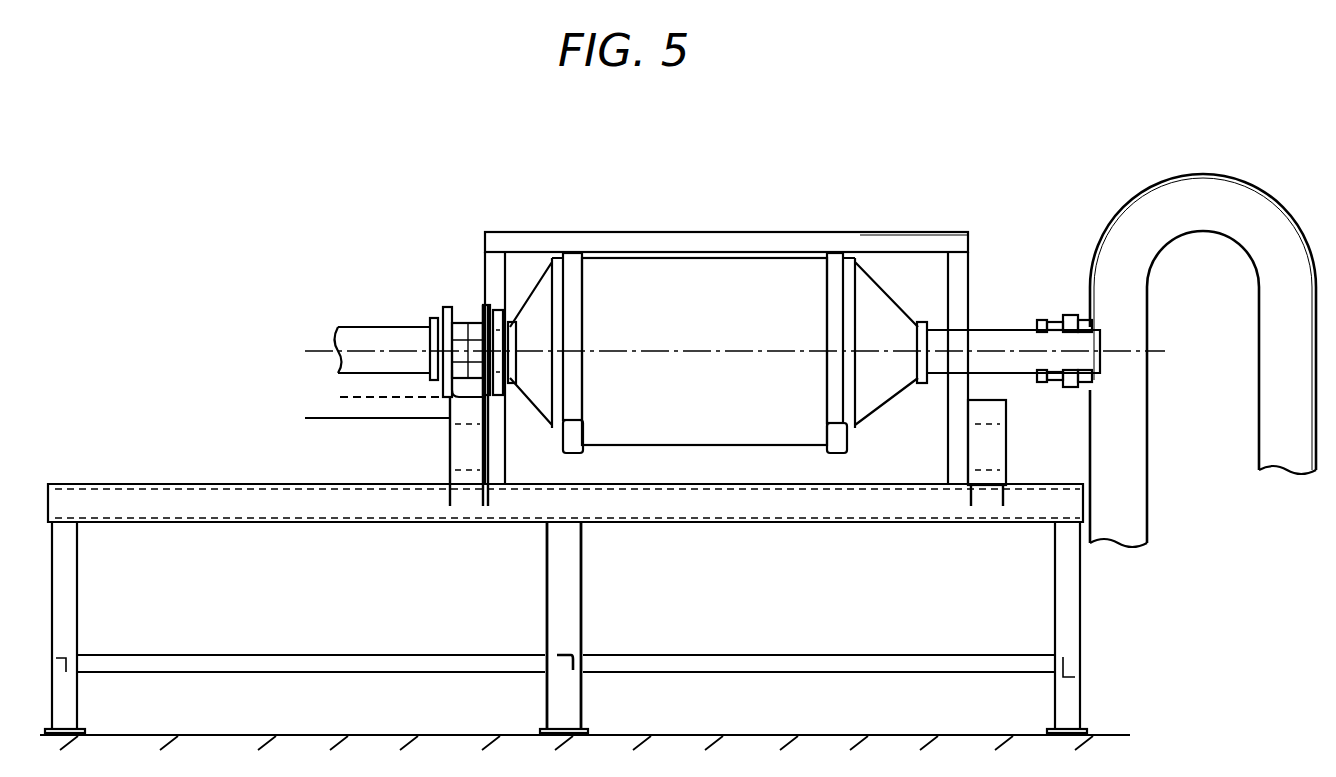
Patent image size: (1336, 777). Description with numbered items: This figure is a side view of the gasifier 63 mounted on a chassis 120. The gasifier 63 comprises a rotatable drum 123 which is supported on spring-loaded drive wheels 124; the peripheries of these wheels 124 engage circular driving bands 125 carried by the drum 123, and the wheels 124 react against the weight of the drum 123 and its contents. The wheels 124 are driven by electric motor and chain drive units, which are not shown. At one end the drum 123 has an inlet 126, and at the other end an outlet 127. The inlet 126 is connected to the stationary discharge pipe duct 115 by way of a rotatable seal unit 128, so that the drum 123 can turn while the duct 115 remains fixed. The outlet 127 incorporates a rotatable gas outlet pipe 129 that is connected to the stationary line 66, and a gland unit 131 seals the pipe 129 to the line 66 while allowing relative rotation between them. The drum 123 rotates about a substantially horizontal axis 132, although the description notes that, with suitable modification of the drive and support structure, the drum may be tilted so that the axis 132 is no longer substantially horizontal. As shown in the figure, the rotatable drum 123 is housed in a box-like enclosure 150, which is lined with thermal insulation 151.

The gasifier 63 is at (676, 226).
The stationary line 66 is at (1090, 433).
The stationary discharge pipe duct 115 is at (343, 338).
The chassis 120 is at (1085, 634).
The rotatable drum 123 is at (739, 290).
The spring-loaded drive wheels 124 is at (578, 437).
The circular driving bands 125 is at (575, 305).
The inlet 126 is at (507, 310).
The outlet 127 is at (920, 330).
The rotatable seal unit 128 is at (465, 400).
The rotatable gas outlet pipe 129 is at (988, 338).
The gland unit 131 is at (1073, 318).
The axis 132 is at (712, 302).
The box-like enclosure 150 is at (920, 222).
The thermal insulation 151 is at (902, 210).